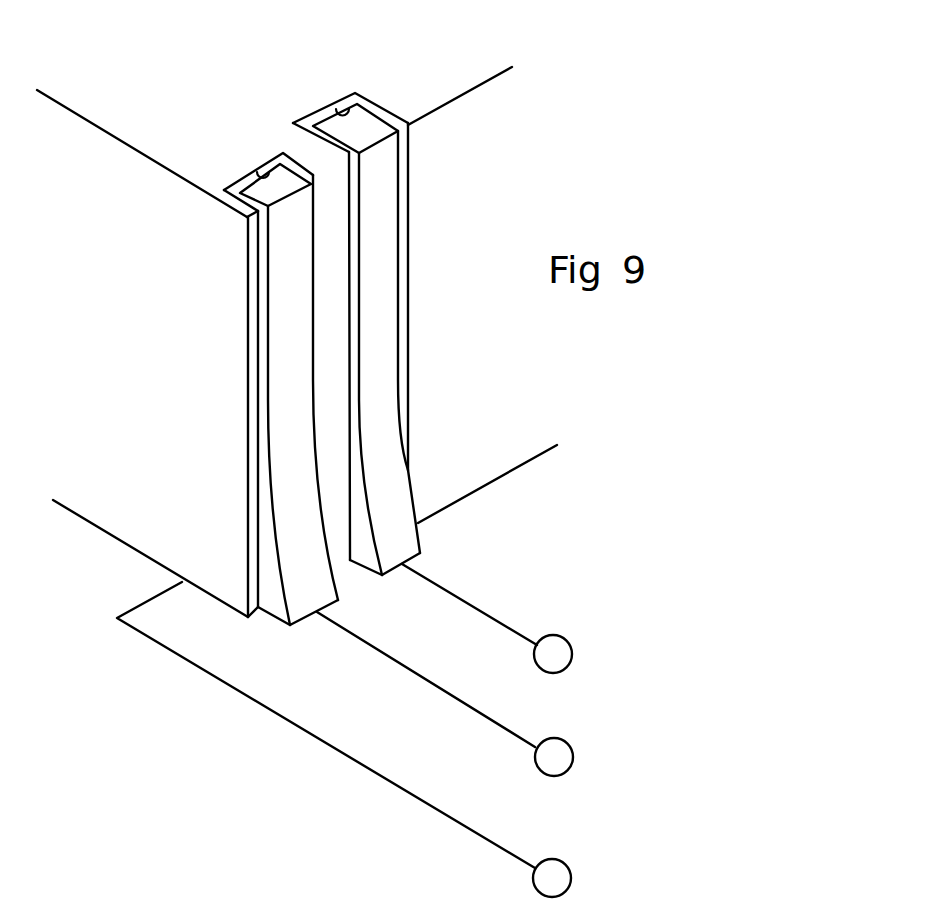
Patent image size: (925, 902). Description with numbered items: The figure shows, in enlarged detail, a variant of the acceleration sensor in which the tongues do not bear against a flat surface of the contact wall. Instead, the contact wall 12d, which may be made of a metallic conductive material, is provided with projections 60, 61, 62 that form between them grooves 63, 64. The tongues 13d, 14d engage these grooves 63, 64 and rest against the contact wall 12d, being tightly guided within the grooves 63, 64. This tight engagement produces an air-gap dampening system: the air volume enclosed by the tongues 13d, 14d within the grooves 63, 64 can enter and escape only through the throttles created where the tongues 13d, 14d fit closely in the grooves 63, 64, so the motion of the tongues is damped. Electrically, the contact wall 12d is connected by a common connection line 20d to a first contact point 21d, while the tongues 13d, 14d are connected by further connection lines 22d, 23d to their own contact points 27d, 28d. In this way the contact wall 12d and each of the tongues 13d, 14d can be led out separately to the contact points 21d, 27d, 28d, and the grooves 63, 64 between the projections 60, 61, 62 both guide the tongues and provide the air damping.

The contact wall 12d is at (157, 143).
The tongue 13d is at (310, 613).
The tongue 14d is at (398, 481).
The common connection line 20d is at (373, 767).
The first contact point 21d is at (552, 878).
The connection line 22d is at (457, 693).
The connection line 23d is at (488, 615).
The contact point 27d is at (555, 755).
The contact point 28d is at (557, 657).
The projection 60 is at (237, 205).
The projection 61 is at (303, 148).
The projection 62 is at (440, 85).
The groove 63 is at (276, 163).
The groove 64 is at (356, 107).